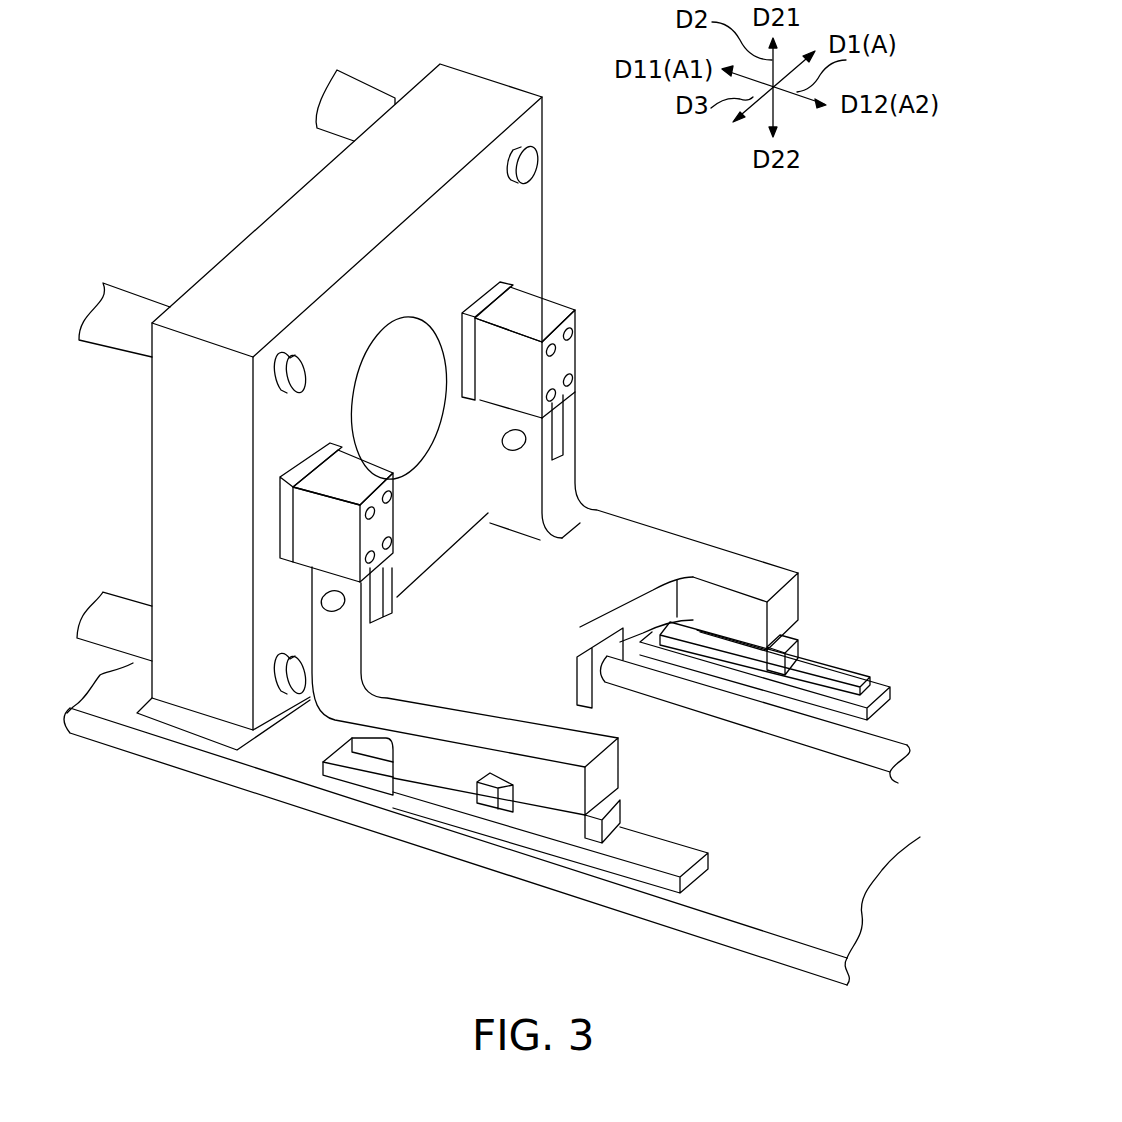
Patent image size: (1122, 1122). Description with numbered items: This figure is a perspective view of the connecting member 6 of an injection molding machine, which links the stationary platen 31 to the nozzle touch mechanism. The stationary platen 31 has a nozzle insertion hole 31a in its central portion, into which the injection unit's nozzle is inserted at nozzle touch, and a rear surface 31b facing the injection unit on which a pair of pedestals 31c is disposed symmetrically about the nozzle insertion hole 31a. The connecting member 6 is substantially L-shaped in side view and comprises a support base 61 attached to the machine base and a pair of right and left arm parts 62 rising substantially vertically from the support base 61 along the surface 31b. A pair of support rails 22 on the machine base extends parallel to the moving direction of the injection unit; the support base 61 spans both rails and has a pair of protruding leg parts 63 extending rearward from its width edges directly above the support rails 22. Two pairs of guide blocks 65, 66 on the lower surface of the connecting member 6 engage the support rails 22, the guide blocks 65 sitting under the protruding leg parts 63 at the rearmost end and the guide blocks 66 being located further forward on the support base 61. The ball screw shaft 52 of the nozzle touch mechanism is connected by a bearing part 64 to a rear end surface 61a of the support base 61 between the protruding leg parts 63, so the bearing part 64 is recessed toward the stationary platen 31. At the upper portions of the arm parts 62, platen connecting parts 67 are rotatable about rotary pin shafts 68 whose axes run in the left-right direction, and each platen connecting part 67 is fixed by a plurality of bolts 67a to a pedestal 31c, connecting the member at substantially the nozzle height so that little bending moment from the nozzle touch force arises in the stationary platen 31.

The stationary platen 31 is at (476, 93).
The nozzle insertion hole 31a is at (393, 330).
The surface 31b is at (523, 200).
The pedestals 31c is at (292, 562).
The connecting member 6 is at (589, 649).
The support base 61 is at (614, 520).
The rear end surface 61a is at (657, 588).
The arm parts 62 is at (427, 660).
The protruding leg parts 63 is at (605, 755).
The bearing part 64 is at (600, 640).
The guide blocks 65 is at (547, 820).
The guide blocks 66 is at (430, 778).
The platen connecting parts 67 is at (308, 530).
The bolts 67a is at (392, 543).
The rotary pin shafts 68 is at (327, 610).
The support rails 22 is at (708, 860).
The ball screw shaft 52 is at (855, 755).